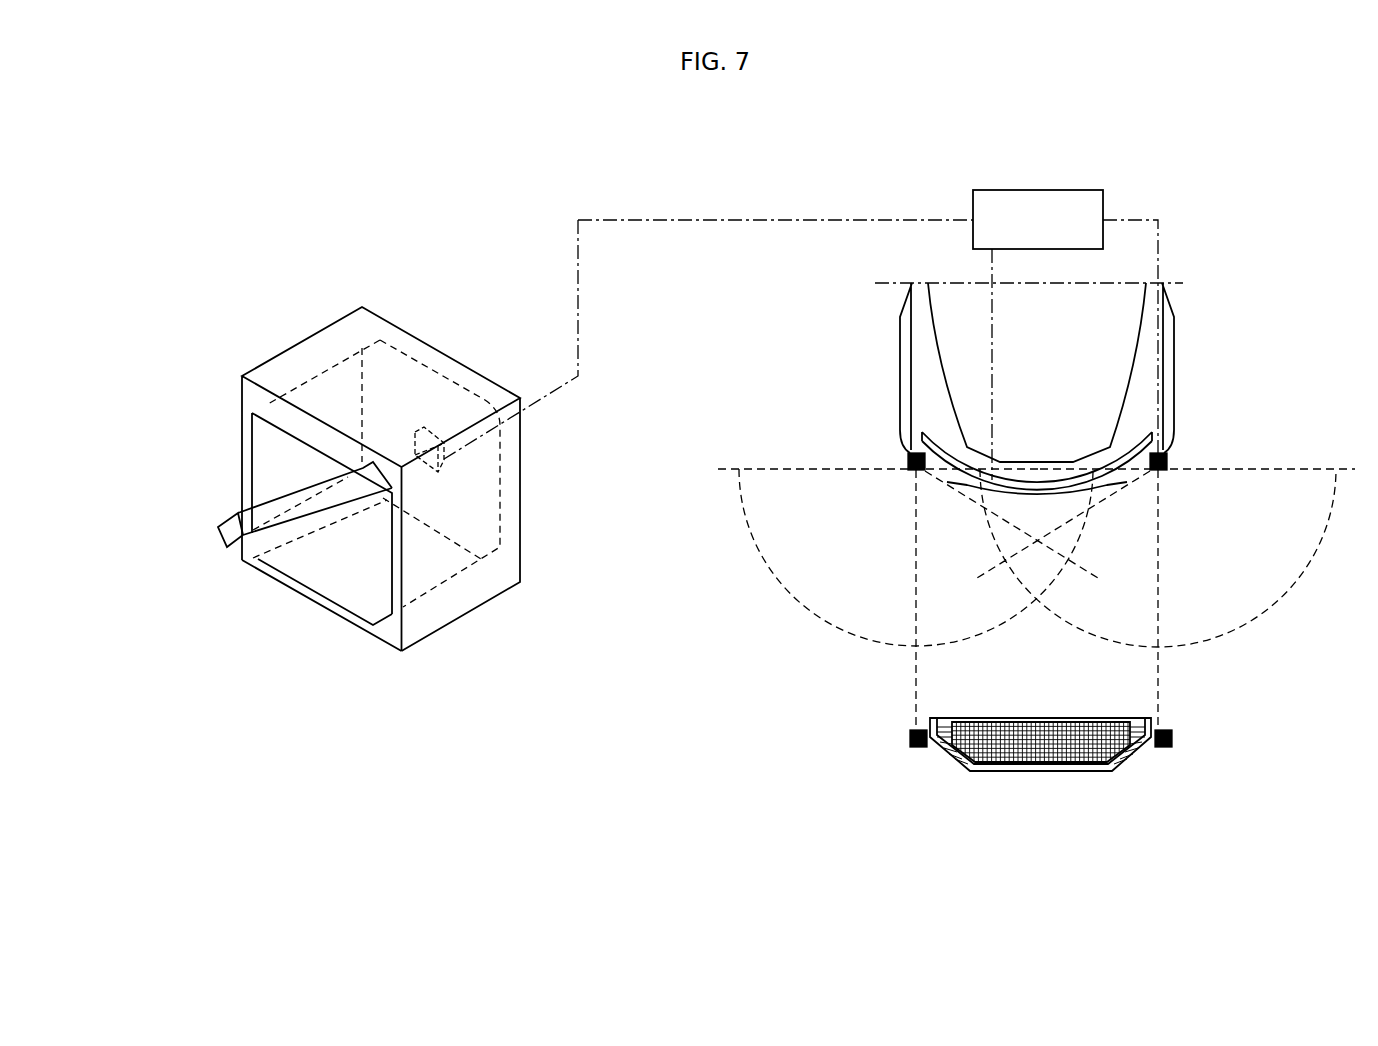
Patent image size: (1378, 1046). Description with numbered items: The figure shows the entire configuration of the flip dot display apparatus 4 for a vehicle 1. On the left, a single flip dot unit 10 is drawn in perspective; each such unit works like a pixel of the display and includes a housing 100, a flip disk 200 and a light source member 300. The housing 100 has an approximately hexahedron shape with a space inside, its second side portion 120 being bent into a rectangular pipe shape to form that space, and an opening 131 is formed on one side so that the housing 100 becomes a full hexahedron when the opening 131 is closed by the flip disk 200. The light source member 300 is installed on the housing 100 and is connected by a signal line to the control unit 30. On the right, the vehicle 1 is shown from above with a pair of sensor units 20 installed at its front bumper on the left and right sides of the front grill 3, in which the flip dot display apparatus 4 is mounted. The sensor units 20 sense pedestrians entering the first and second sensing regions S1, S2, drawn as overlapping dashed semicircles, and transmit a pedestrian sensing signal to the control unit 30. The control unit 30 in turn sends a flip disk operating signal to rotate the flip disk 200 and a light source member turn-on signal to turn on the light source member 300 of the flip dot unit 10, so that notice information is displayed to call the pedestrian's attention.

The vehicle 1 is at (882, 339).
The front grill 3 is at (1040, 760).
The flip dot display apparatus 4 is at (1043, 722).
The flip dot unit 10 is at (530, 498).
The sensor unit 20 is at (907, 457).
The control unit 30 is at (1043, 190).
The housing 100 is at (291, 340).
The second side portion 120 is at (495, 588).
The opening 131 is at (355, 582).
The flip disk 200 is at (230, 536).
The light source member 300 is at (423, 426).
The first sensing region S1 is at (1269, 607).
The second sensing region S2 is at (785, 592).